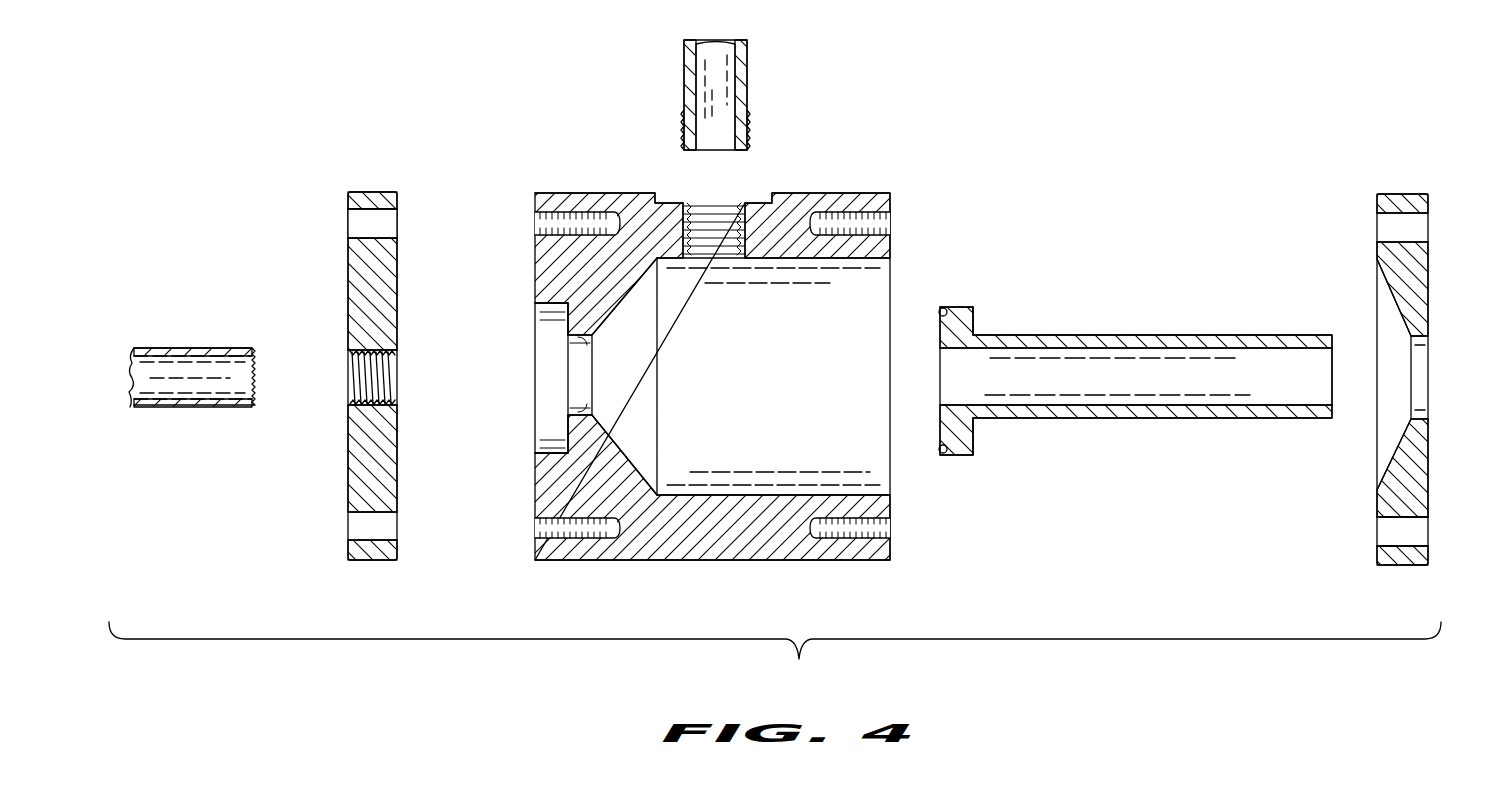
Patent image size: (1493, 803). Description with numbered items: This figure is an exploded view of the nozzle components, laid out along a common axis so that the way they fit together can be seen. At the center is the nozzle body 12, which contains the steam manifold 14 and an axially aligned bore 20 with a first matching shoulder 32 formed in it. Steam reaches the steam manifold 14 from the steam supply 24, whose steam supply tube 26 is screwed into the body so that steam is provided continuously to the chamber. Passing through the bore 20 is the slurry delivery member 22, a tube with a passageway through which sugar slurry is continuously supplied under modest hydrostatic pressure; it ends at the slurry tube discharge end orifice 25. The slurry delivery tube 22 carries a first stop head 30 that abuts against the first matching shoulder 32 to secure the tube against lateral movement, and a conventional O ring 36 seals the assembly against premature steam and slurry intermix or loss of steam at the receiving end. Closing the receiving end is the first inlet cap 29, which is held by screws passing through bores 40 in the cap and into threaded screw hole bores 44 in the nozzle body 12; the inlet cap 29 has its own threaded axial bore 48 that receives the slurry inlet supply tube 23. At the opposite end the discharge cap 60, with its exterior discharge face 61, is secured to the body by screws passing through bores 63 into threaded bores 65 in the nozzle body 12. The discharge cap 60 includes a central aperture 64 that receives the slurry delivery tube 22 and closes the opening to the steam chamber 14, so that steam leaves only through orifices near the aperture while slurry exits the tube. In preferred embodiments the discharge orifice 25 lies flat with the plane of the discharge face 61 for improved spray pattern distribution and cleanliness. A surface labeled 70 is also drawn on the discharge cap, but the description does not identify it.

The nozzle body 12 is at (720, 357).
The steam manifold 14 is at (722, 489).
The axially aligned bore 20 is at (590, 352).
The slurry delivery member 22 is at (1136, 381).
The slurry inlet supply tube 23 is at (176, 347).
The steam supply 24 is at (769, 86).
The slurry tube discharge end orifice 25 is at (1332, 410).
The steam supply tube 26 is at (744, 118).
The first inlet cap 29 is at (409, 338).
The first stop head 30 is at (967, 307).
The first matching shoulder 32 is at (535, 325).
The O ring 36 is at (946, 455).
The bores 40 is at (378, 236).
The threaded screw hole bores 44 is at (562, 222).
The axial bore 48 is at (385, 366).
The discharge cap 60 is at (1389, 330).
The exterior discharge face 61 is at (1430, 498).
The bores 63 is at (1385, 240).
The central aperture 64 is at (1468, 402).
The threaded bores 65 is at (866, 210).
The conical surface 70 is at (1380, 463).